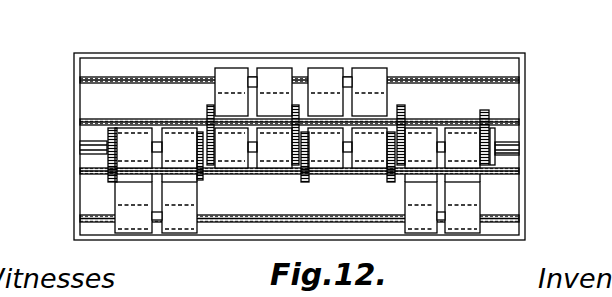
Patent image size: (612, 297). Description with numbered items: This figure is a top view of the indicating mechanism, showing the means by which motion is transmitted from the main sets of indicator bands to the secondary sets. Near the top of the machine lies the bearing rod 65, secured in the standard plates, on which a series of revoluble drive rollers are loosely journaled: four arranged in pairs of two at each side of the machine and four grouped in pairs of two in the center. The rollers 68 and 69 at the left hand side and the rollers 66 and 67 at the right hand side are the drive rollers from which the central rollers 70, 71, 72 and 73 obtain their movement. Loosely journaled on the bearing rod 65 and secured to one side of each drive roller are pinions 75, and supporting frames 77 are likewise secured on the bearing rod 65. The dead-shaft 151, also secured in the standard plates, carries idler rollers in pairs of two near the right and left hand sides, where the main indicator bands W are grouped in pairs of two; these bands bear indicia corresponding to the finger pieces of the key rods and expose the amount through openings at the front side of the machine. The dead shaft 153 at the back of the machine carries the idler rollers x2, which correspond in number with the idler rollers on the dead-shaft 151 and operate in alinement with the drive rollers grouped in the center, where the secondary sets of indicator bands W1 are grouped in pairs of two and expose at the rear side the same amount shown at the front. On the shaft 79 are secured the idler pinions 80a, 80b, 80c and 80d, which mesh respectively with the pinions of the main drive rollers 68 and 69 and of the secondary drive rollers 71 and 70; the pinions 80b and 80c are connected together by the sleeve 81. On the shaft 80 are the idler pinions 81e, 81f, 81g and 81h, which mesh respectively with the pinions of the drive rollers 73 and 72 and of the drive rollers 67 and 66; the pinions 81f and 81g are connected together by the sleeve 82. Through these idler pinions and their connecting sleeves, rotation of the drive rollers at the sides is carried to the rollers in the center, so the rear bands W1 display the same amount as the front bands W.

The dead shaft 153 is at (132, 79).
The shaft 79 is at (80, 172).
The dead-shaft 151 is at (92, 218).
The bearing rod 65 is at (93, 145).
The main drive roller 68 is at (127, 137).
The main drive roller 69 is at (173, 132).
The sleeve 82 is at (320, 120).
The drive roller 67 is at (415, 133).
The drive roller 66 is at (455, 132).
The idler rollers x2 is at (230, 75).
The secondary sets of indicator bands W1 is at (273, 90).
The main indicator bands W is at (183, 215).
The shaft 80 is at (108, 125).
The idler pinion 80a is at (112, 182).
The idler pinion 80b is at (198, 178).
The idler pinion 80c is at (303, 173).
The idler pinion 80d is at (393, 172).
The sleeve 81 is at (255, 170).
The idler pinion 81e is at (209, 104).
The idler pinion 81f is at (297, 106).
The idler pinion 81g is at (402, 106).
The idler pinion 81h is at (485, 108).
The pinions 75 is at (110, 128).
The supporting frames 77 is at (500, 152).
The drive roller 72 is at (282, 153).
The drive roller 73 is at (290, 162).
The secondary drive roller 71 is at (333, 153).
The secondary drive roller 70 is at (377, 153).